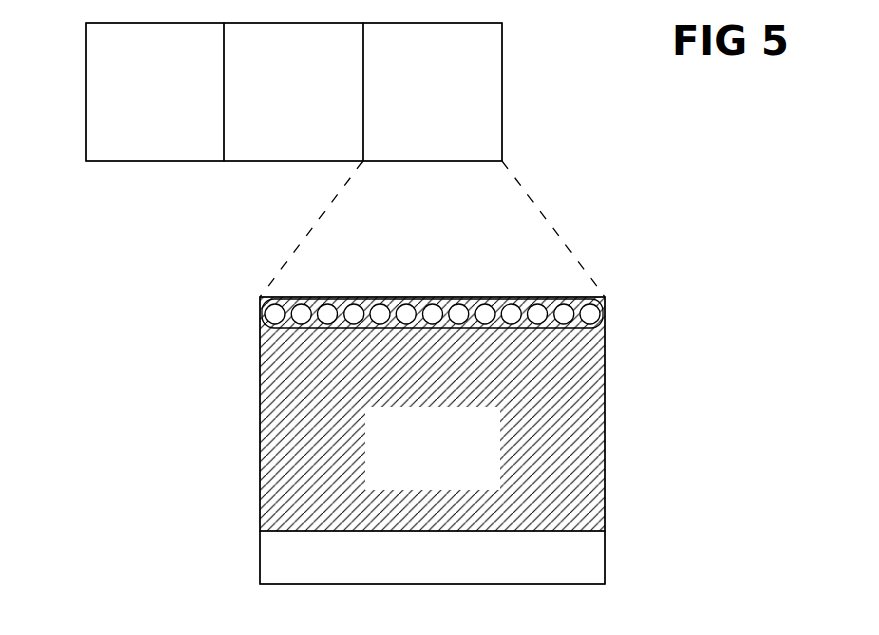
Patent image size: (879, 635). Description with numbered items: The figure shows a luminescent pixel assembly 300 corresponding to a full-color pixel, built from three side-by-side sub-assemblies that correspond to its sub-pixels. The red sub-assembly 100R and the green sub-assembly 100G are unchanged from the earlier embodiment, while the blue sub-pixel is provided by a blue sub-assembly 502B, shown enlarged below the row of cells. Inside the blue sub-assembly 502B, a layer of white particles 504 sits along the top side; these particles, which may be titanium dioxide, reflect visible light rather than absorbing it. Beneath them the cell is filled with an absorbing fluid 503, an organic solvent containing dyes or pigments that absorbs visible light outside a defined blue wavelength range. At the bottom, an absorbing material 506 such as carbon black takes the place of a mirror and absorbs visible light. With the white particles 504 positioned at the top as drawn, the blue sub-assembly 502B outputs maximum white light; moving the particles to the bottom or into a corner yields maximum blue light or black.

The pixel assembly 300 is at (88, 450).
The red sub-assembly 100R is at (155, 92).
The green sub-assembly 100G is at (293, 92).
The blue sub-assembly 502B is at (655, 402).
The absorbing fluid 503 is at (432, 414).
The white particles 504 is at (432, 328).
The absorbing material 506 is at (432, 557).